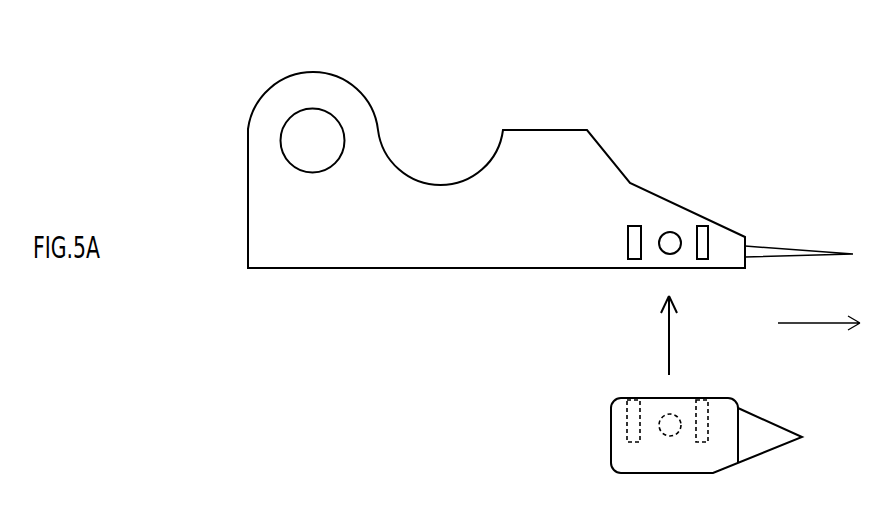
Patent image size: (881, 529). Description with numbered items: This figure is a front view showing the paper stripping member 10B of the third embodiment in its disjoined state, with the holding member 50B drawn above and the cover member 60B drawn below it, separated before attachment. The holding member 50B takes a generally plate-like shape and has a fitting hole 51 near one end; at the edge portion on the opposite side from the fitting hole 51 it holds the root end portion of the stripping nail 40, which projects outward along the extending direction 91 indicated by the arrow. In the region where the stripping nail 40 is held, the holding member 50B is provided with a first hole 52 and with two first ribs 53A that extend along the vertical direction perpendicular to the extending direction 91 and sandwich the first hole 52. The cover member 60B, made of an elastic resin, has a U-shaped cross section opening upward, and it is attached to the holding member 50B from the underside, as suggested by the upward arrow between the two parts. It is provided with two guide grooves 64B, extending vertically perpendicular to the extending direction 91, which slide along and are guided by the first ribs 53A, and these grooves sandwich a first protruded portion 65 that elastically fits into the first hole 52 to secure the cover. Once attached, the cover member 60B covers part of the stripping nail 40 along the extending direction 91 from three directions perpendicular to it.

The paper stripping member 10B is at (222, 83).
The fitting hole 51 is at (334, 118).
The holding member 50B is at (508, 128).
The first rib 53A is at (632, 226).
The first hole 52 is at (667, 233).
The stripping nail 40 is at (818, 253).
The extending direction 91 is at (819, 314).
The cover member 60B is at (670, 477).
The guide groove 64B is at (633, 397).
The first protruded portion 65 is at (670, 415).